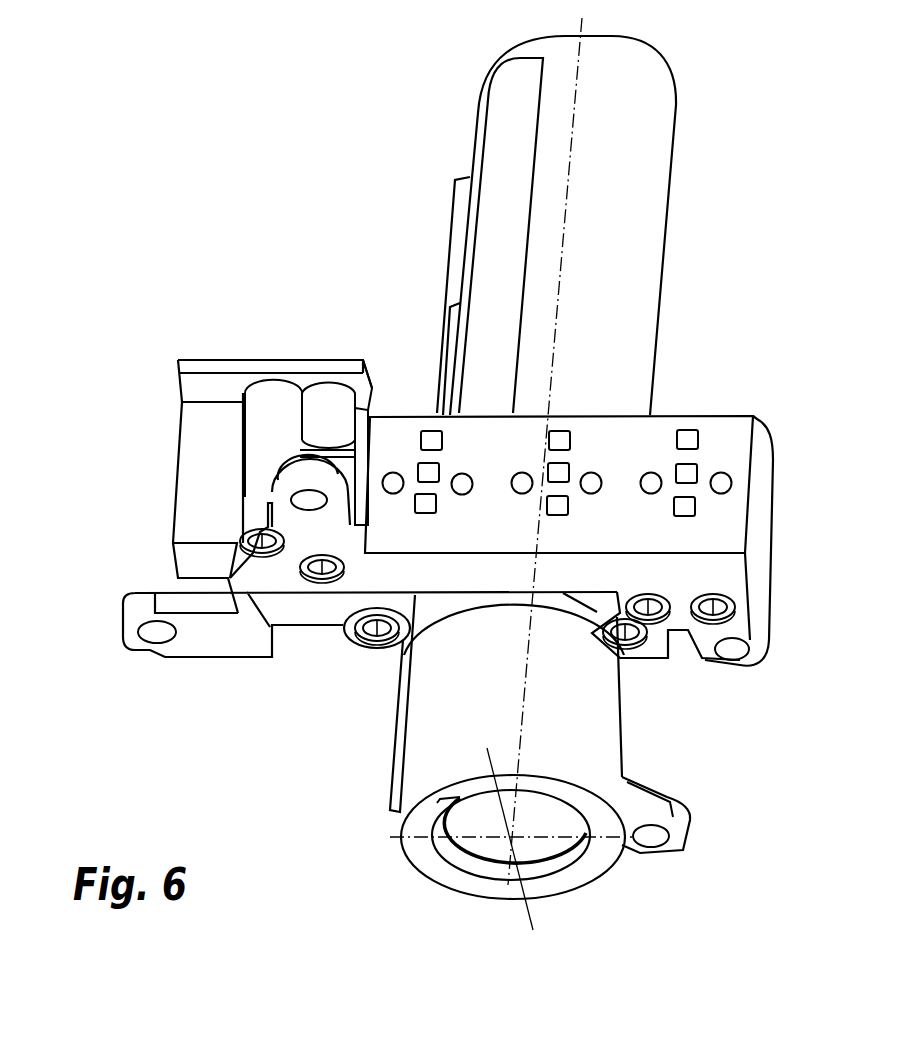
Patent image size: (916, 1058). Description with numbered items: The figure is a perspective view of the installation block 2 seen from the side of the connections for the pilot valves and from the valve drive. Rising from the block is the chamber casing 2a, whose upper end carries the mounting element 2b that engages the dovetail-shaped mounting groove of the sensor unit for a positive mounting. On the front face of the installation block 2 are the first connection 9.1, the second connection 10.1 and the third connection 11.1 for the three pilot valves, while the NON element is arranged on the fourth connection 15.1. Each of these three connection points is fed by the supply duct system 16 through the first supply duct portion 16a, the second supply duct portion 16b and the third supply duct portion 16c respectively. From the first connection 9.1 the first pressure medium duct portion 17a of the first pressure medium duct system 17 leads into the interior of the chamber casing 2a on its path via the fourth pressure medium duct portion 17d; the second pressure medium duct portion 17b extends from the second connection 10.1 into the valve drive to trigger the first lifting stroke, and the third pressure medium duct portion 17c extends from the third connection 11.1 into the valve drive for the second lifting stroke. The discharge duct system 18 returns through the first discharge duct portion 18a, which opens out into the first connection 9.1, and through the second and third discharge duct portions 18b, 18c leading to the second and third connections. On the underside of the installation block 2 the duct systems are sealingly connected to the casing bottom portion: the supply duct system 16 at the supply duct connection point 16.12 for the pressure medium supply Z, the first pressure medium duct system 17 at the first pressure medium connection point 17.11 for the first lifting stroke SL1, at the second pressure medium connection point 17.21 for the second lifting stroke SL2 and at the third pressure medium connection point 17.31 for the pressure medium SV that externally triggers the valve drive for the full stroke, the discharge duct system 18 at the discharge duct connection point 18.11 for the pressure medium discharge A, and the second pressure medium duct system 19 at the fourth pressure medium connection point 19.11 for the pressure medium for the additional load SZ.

The installation block 2 is at (453, 158).
The chamber casing 2a is at (597, 127).
The mounting element 2b is at (460, 210).
The first connection 9.1 is at (396, 495).
The second connection 10.1 is at (521, 496).
The third connection 11.1 is at (655, 491).
The fourth connection 15.1 is at (317, 352).
The supply duct system 16 is at (626, 332).
The first supply duct portion 16a is at (429, 437).
The second supply duct portion 16b is at (560, 440).
The third supply duct portion 16c is at (688, 438).
The supply duct connection point 16.12 is at (660, 600).
The first pressure medium duct system 17 is at (620, 374).
The first pressure medium duct portion 17a is at (426, 471).
The second pressure medium duct portion 17b is at (558, 472).
The third pressure medium duct portion 17c is at (687, 473).
The first pressure medium connection point 17.11 is at (607, 630).
The second pressure medium connection point 17.21 is at (727, 602).
The third pressure medium connection point 17.31 is at (400, 648).
The fourth pressure medium duct portion 17d is at (457, 800).
The discharge duct system 18 is at (618, 419).
The first discharge duct portion 18a is at (425, 503).
The second discharge duct portion 18b is at (560, 505).
The third discharge duct portion 18c is at (686, 506).
The discharge duct connection point 18.11 is at (320, 562).
The second pressure medium duct system 19 is at (262, 432).
The fourth pressure medium connection point 19.11 is at (255, 545).
The pressure medium for additional load SZ is at (262, 543).
The pressure medium discharge A is at (322, 567).
The pressure medium for full stroke SV is at (377, 628).
The first lifting stroke SL1 is at (623, 627).
The pressure medium supply Z is at (646, 610).
The second lifting stroke SL2 is at (713, 607).